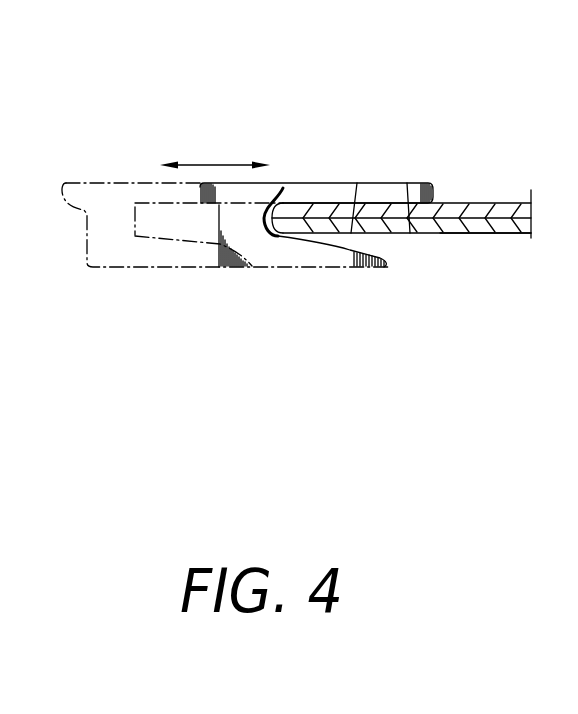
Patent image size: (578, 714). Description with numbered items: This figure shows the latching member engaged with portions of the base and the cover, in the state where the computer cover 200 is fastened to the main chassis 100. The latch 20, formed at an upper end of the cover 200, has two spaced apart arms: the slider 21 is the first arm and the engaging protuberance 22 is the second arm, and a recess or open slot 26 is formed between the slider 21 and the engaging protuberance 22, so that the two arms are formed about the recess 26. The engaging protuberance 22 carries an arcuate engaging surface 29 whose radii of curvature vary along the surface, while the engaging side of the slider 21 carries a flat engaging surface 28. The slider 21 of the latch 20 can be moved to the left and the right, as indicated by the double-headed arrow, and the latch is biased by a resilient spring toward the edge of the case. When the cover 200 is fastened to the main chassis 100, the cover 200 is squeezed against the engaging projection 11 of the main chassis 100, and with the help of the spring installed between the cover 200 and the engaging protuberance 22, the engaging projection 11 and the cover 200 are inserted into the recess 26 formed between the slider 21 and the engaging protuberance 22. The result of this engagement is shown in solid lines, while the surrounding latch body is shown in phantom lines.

The engaging projection 11 is at (458, 233).
The latch 20 is at (283, 269).
The slider 21 is at (383, 190).
The engaging protuberance 22 is at (355, 267).
The recess 26 is at (283, 189).
The flat engaging surface 28 is at (410, 233).
The arcuate engaging surface 29 is at (357, 183).
The main chassis 100 is at (513, 233).
The cover 200 is at (475, 204).